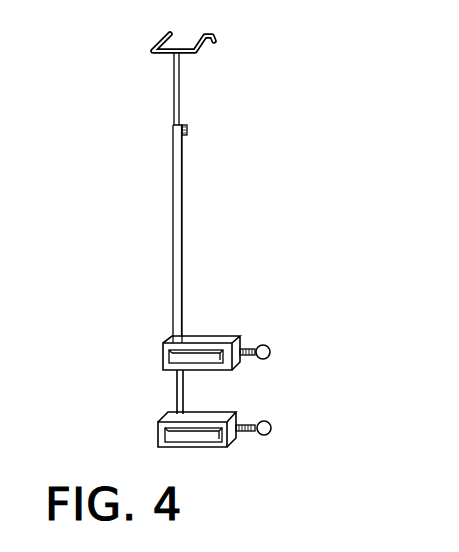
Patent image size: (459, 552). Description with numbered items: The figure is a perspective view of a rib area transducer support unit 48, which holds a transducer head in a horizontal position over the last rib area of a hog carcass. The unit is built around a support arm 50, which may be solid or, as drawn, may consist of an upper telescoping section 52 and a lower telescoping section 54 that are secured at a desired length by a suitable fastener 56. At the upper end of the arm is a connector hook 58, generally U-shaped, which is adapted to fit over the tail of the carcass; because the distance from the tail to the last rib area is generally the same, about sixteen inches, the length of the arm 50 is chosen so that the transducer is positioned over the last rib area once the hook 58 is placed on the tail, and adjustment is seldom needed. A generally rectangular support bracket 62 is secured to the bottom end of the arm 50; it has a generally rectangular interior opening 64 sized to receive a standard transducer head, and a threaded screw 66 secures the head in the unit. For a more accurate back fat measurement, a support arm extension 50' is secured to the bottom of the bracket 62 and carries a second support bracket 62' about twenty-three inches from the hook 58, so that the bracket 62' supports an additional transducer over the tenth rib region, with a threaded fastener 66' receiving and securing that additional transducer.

The rib area transducer support unit 48 is at (216, 241).
The support arm 50 is at (214, 195).
The support arm extension 50' is at (143, 392).
The upper telescoping section 52 is at (181, 88).
The lower telescoping section 54 is at (172, 233).
The fastener 56 is at (189, 128).
The connector hook 58 is at (156, 44).
The support bracket 62 is at (207, 331).
The second support bracket 62' is at (231, 416).
The interior opening 64 is at (208, 356).
The threaded screw 66 is at (268, 330).
The threaded fastener 66' is at (260, 453).